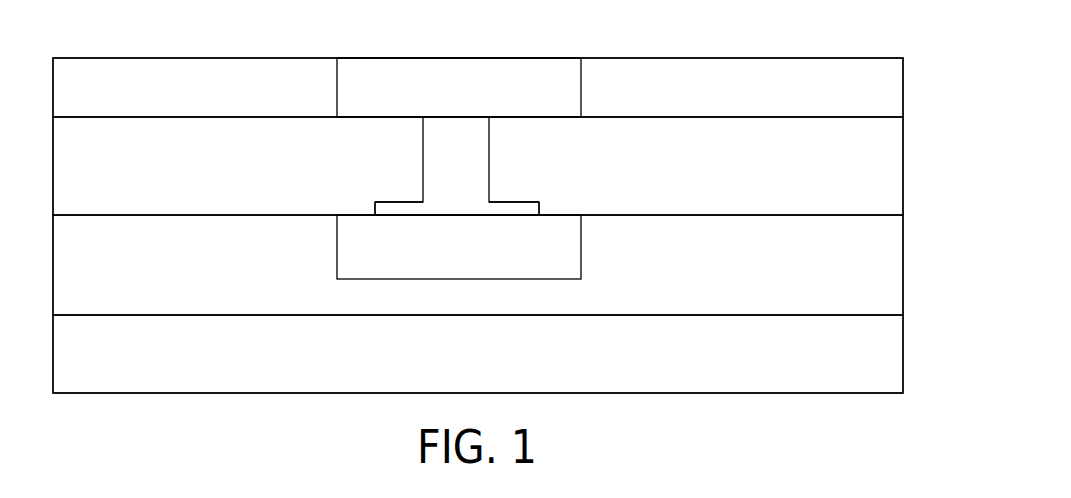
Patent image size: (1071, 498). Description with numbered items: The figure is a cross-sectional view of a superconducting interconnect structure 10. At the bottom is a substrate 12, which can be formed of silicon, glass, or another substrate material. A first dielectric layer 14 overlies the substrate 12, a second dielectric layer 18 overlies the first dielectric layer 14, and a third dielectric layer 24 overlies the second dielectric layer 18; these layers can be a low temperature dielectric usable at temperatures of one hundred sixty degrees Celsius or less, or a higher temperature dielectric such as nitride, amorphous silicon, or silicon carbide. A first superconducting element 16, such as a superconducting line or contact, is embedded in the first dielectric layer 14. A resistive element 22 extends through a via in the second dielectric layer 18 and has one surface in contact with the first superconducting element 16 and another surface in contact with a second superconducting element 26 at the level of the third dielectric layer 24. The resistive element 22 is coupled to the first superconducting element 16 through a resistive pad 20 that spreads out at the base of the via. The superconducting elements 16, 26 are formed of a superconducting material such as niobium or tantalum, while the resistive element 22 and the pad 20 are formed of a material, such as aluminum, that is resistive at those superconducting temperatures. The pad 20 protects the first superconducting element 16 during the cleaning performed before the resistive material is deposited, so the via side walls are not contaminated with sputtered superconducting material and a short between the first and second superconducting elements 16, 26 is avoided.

The superconducting interconnect structure 10 is at (891, 27).
The substrate 12 is at (903, 333).
The first dielectric layer 14 is at (903, 260).
The first superconducting element 16 is at (450, 260).
The second dielectric layer 18 is at (903, 165).
The resistive pad 20 is at (512, 201).
The resistive element 22 is at (444, 160).
The third dielectric layer 24 is at (903, 90).
The second superconducting element 26 is at (438, 90).